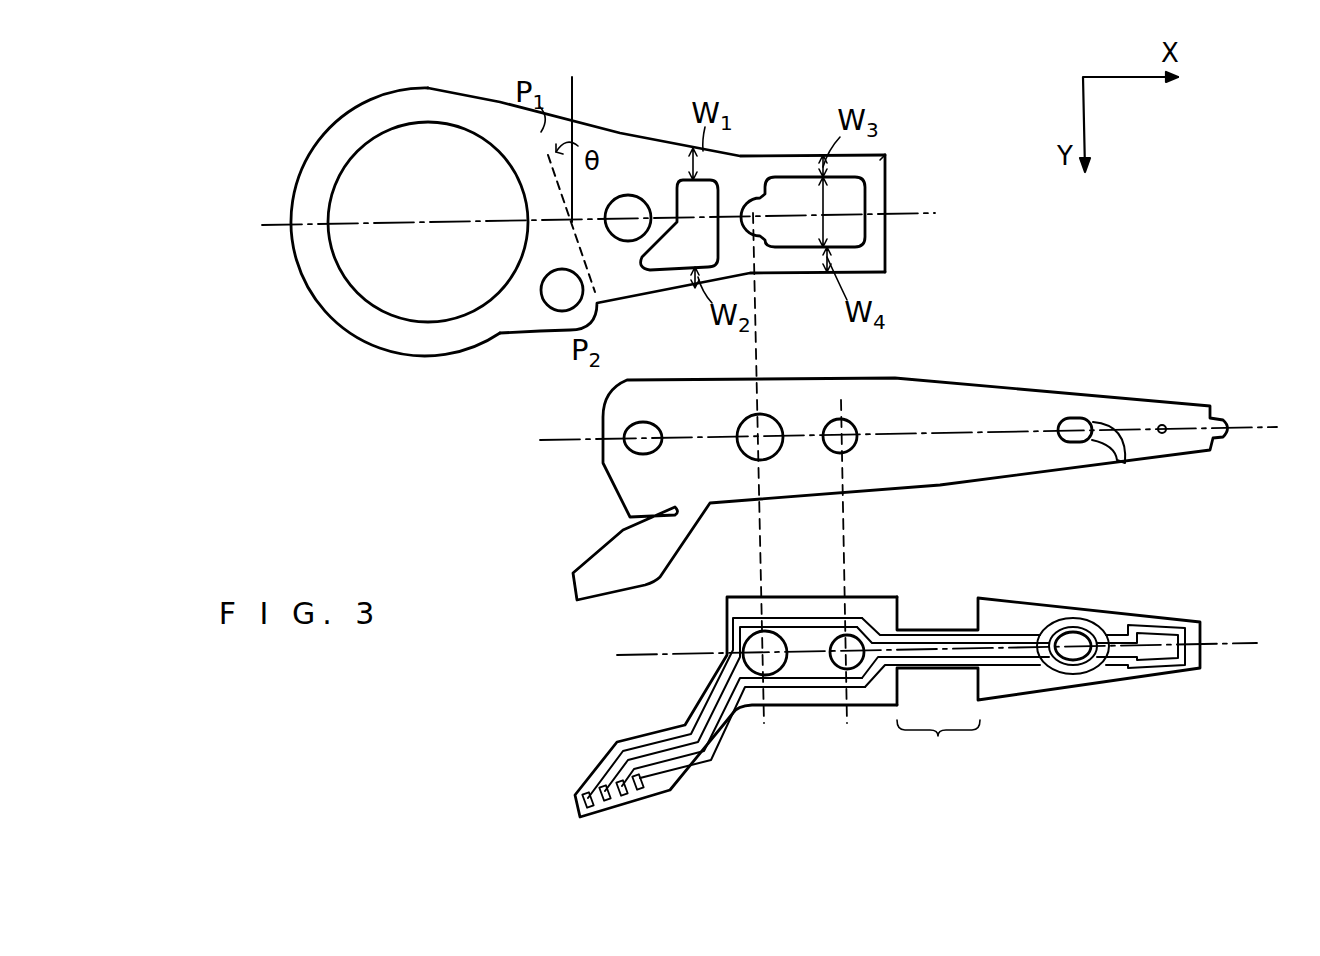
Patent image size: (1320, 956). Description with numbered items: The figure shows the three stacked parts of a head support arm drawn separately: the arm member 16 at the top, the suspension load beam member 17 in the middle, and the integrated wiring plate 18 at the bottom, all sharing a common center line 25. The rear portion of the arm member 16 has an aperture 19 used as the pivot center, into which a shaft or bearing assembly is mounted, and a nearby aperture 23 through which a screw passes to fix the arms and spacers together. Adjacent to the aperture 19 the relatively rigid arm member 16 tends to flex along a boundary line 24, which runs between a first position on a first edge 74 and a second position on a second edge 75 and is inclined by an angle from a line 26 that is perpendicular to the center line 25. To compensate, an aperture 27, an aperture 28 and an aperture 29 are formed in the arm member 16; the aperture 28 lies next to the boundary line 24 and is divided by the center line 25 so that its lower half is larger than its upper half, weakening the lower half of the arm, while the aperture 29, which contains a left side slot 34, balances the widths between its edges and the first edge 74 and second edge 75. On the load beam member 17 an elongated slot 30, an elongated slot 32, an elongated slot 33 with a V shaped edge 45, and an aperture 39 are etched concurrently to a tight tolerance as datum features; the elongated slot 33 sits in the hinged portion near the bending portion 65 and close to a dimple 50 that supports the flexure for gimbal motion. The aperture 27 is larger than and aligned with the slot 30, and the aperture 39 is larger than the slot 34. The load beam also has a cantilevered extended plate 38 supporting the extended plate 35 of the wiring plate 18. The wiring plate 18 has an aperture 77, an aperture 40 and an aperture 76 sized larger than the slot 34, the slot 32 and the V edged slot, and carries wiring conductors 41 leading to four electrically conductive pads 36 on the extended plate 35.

The arm member 16 is at (327, 132).
The suspension load beam member 17 is at (968, 380).
The integrated wiring plate 18 is at (1023, 693).
The aperture 19 is at (350, 265).
The aperture 23 is at (555, 311).
The boundary line 24 is at (547, 145).
The center line 25 is at (912, 213).
The line 26 is at (573, 107).
The aperture 27 is at (628, 195).
The aperture 28 is at (720, 183).
The aperture 29 is at (880, 153).
The elongated slot 30 is at (643, 423).
The elongated slot 32 is at (850, 420).
The elongated slot 33 is at (1078, 418).
The left side slot 34 is at (757, 183).
The extended plate 35 is at (607, 757).
The electrically conductive pads 36 is at (600, 810).
The cantilevered extended plate 38 is at (588, 560).
The aperture 39 is at (748, 415).
The aperture 40 is at (855, 637).
The wiring conductors 41 is at (813, 687).
The V shaped edge 45 is at (1123, 463).
The dimple 50 is at (1164, 425).
The bending portion 65 is at (938, 746).
The first edge 74 is at (668, 143).
The second edge 75 is at (648, 297).
The aperture 76 is at (1090, 630).
The aperture 77 is at (775, 632).